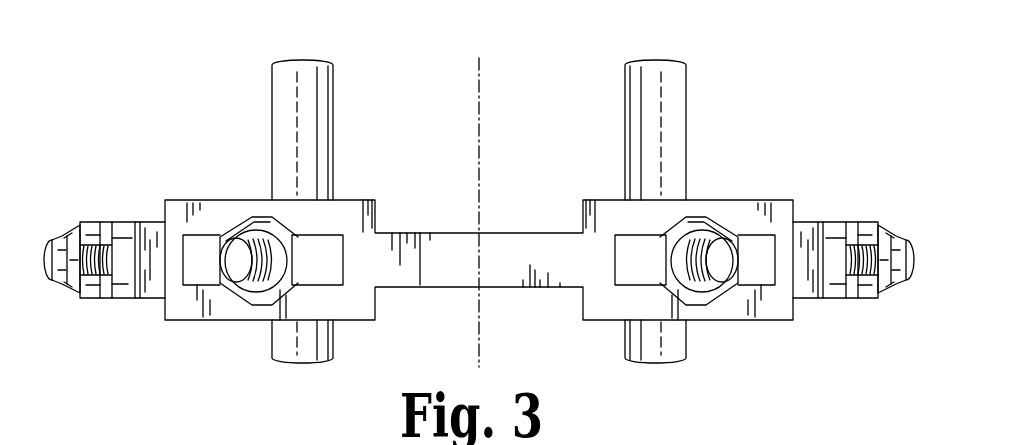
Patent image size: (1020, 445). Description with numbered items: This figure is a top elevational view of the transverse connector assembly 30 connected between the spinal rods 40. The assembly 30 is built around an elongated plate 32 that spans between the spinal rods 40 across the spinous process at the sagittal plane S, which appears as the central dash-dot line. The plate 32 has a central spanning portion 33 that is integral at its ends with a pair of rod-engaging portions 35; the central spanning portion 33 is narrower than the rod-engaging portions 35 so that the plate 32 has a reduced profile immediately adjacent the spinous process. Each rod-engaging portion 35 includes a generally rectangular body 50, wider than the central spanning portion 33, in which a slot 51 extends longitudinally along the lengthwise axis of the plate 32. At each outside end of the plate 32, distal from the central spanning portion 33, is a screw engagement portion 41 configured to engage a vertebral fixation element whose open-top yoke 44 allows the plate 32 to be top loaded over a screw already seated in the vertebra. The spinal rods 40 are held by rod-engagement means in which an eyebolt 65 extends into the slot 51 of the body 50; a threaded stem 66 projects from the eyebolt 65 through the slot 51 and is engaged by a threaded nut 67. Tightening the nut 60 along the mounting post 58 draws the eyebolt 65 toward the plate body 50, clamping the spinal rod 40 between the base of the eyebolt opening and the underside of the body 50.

The sagittal plane S is at (479, 78).
The transverse connector assembly 30 is at (479, 211).
The elongated plate 32 is at (479, 252).
The central spanning portion 33 is at (503, 240).
The rod-engaging portions 35 is at (228, 313).
The spinal rods 40 is at (278, 77).
The screw engagement portion 41 is at (125, 218).
The open-top yoke 44 is at (87, 288).
The body 50 is at (481, 255).
The slot 51 is at (343, 248).
The mounting post 58 is at (52, 250).
The nut 60 is at (479, 266).
The eyebolt 65 is at (330, 265).
The threaded stem 66 is at (240, 247).
The threaded nut 67 is at (258, 298).